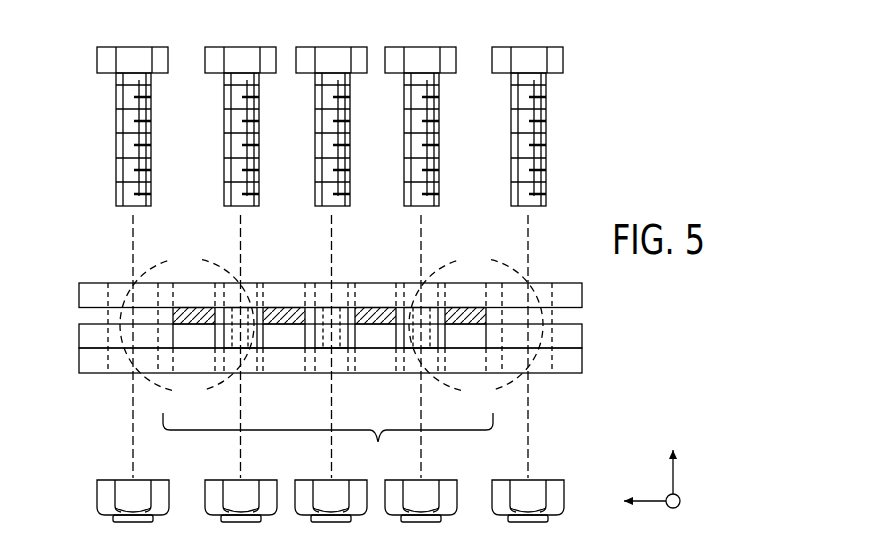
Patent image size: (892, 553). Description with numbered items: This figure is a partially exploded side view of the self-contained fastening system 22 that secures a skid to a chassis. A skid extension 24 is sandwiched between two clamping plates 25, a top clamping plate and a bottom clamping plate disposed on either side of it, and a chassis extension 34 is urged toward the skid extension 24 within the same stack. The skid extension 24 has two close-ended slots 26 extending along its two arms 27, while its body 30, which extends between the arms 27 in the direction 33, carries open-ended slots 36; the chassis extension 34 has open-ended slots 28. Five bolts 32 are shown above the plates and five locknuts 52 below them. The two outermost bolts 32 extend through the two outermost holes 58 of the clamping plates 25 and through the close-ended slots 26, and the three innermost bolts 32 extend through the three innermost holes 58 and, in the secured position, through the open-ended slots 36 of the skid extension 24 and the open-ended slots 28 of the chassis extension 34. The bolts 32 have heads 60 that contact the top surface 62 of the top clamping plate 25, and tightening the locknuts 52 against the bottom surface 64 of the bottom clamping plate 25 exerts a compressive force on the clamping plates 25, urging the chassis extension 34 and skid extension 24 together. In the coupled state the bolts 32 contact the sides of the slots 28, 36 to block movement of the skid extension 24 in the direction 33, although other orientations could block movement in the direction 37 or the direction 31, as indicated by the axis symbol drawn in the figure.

The self-contained fastening system 22 is at (614, 111).
The skid extension 24 is at (567, 335).
The clamping plates 25 is at (568, 293).
The close-ended slots 26 is at (121, 337).
The arms 27 is at (79, 336).
The open-ended slots 28 is at (331, 363).
The body 30 is at (328, 442).
The direction 31 is at (674, 481).
The bolts 32 is at (224, 136).
The direction 33 is at (652, 502).
The chassis extension 34 is at (487, 318).
The open-ended slots 36 is at (264, 393).
The direction 37 is at (680, 503).
The locknuts 52 is at (142, 479).
The holes 58 is at (308, 402).
The heads 60 is at (328, 47).
The top surface 62 is at (91, 283).
The bottom surface 64 is at (92, 373).